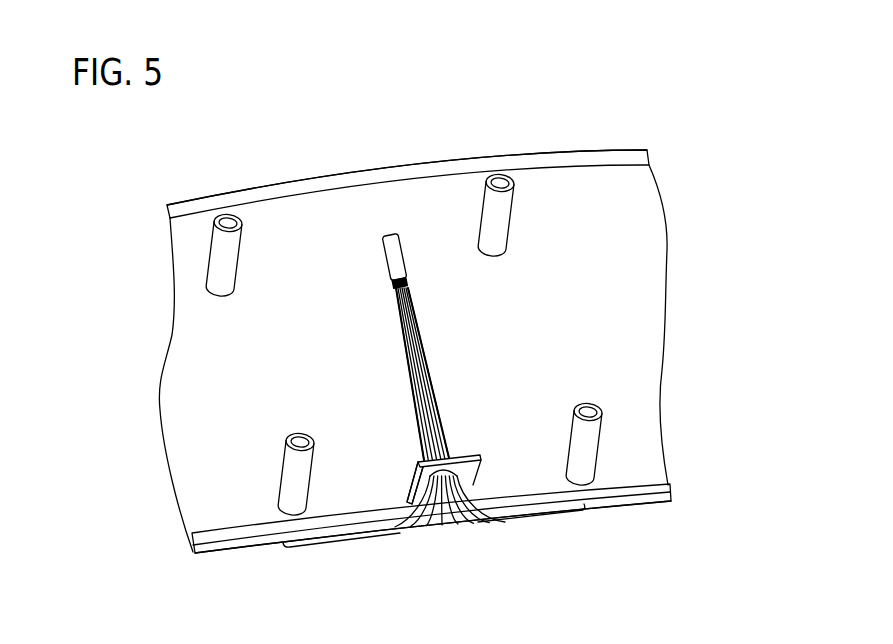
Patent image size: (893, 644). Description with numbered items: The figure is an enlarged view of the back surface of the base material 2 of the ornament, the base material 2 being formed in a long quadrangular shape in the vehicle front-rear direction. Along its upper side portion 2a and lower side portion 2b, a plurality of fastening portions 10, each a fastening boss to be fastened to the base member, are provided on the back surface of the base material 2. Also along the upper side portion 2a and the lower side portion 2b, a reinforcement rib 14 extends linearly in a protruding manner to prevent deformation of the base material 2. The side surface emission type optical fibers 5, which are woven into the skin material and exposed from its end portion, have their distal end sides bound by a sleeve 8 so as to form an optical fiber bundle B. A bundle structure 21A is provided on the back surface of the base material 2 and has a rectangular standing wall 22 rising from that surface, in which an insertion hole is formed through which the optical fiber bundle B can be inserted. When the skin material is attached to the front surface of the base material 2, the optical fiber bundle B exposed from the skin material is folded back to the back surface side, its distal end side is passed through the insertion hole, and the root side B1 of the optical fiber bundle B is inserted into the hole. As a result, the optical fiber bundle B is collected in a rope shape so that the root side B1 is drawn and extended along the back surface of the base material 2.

The base material 2 is at (637, 255).
The upper side portion 2a is at (322, 176).
The lower side portion 2b is at (210, 553).
The optical fiber 5 is at (458, 527).
The sleeve 8 is at (403, 252).
The fastening portion 10 is at (233, 247).
The reinforcement rib 14 is at (570, 163).
The bundle structure 21A is at (463, 432).
The standing wall 22 is at (478, 472).
The optical fiber bundle B is at (389, 333).
The root side B1 is at (409, 478).